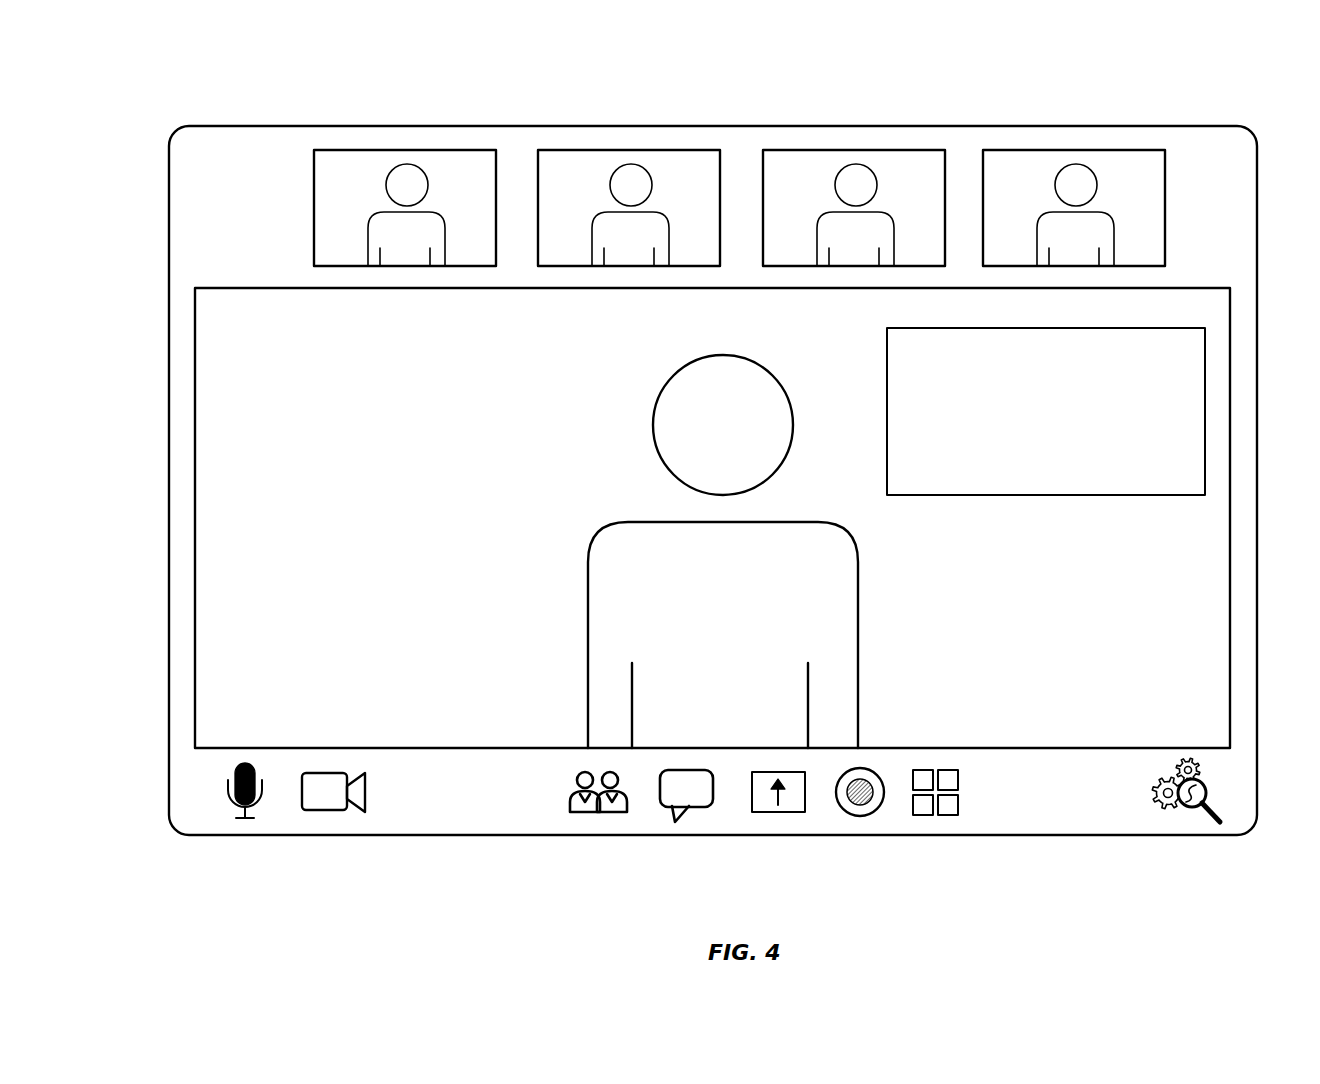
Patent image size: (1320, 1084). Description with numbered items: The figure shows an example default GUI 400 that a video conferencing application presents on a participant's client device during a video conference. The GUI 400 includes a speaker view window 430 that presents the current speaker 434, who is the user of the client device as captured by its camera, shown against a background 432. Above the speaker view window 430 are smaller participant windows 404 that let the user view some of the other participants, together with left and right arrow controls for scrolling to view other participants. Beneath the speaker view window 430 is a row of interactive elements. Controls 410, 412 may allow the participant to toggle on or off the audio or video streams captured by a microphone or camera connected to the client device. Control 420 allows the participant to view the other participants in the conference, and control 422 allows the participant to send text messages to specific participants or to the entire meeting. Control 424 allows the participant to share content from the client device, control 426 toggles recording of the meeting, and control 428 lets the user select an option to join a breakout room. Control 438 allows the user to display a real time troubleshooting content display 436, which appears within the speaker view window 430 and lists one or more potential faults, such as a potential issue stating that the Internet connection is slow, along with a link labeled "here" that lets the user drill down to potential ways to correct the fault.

The default GUI 400 is at (185, 84).
The participant windows 404 is at (284, 170).
The control 410 is at (248, 818).
The control 412 is at (335, 812).
The control 420 is at (600, 812).
The control 422 is at (688, 810).
The control 424 is at (786, 812).
The control 426 is at (858, 816).
The control 428 is at (943, 815).
The speaker view window 430 is at (195, 360).
The background 432 is at (381, 418).
The current speaker 434 is at (723, 551).
The real time troubleshooting content display 436 is at (1208, 355).
The control 438 is at (1228, 822).